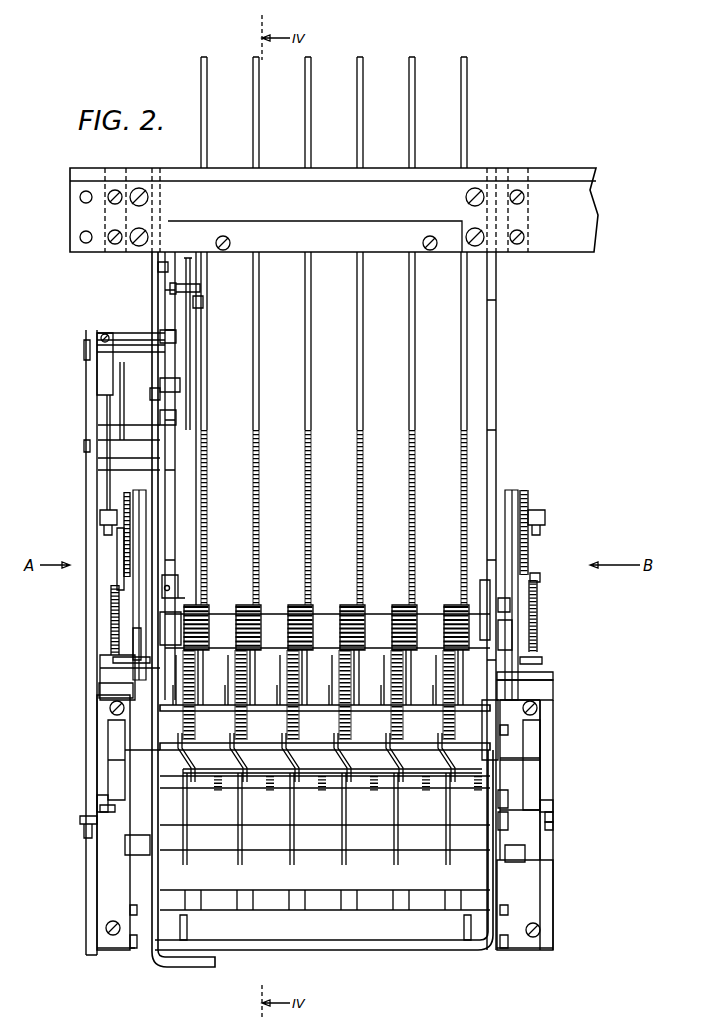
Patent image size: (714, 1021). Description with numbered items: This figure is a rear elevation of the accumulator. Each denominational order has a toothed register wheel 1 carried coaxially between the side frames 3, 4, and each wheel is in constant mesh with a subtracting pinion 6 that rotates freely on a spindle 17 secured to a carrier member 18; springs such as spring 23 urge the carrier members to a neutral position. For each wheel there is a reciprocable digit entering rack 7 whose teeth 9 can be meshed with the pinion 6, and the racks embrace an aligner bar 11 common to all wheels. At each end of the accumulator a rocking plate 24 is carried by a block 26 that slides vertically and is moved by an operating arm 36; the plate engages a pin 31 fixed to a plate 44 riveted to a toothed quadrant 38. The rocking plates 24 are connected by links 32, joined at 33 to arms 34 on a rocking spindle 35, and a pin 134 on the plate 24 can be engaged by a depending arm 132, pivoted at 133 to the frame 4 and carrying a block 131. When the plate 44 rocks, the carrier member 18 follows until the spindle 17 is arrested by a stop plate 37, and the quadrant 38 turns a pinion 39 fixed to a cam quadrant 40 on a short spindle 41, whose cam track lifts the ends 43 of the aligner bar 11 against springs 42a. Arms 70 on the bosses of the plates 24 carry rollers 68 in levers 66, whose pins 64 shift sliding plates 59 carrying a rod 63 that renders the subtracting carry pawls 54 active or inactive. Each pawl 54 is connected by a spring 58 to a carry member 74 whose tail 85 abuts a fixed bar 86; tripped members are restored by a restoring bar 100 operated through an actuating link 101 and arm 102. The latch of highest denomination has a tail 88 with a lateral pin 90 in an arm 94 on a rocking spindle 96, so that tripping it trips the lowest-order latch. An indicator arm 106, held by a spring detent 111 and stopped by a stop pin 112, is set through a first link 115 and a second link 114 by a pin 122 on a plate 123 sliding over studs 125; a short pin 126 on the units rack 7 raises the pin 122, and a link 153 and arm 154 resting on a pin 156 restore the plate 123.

The register wheel 1 is at (347, 694).
The side frame 3 is at (497, 480).
The side frame 4 is at (160, 295).
The subtracting pinion 6 is at (303, 615).
The digit entering rack 7 is at (311, 372).
The teeth 9 is at (311, 520).
The aligner bar 11 is at (378, 612).
The spindle 17 is at (551, 642).
The carrier member 18 is at (113, 659).
The spring 23 is at (112, 608).
The rocking plate 24 is at (95, 740).
The block 26 is at (130, 948).
The pin 31 is at (101, 692).
The link 32 is at (110, 806).
The connection 33 is at (100, 798).
The arm 34 is at (564, 773).
The rocking spindle 35 is at (507, 734).
The operating arm 36 is at (147, 948).
The stop plate 37 is at (511, 605).
The toothed quadrant 38 is at (121, 560).
The pinion 39 is at (128, 490).
The cam quadrant 40 is at (139, 548).
The short spindle 41 is at (100, 520).
The spring 42a is at (172, 585).
The end of aligner bar 43 is at (490, 592).
The plate 44 is at (135, 634).
The subtracting carry pawl 54 is at (316, 756).
The spring 58 is at (325, 782).
The sliding plate 59 is at (160, 750).
The rod 63 is at (517, 798).
The pin 64 is at (564, 752).
The lever 66 is at (152, 818).
The roller 68 is at (127, 842).
The arm 70 is at (120, 893).
The carry member 74 is at (388, 826).
The tail 85 is at (400, 890).
The fixed bar 86 is at (395, 905).
The tail 88 is at (178, 905).
The lateral pin 90 is at (188, 926).
The arm 94 is at (192, 940).
The rocking spindle 96 is at (262, 945).
The restoring bar 100 is at (266, 775).
The actuating link 101 is at (548, 806).
The arm 102 is at (519, 819).
The indicator arm 106 is at (107, 482).
The spring detent 111 is at (98, 378).
The stop pin 112 is at (84, 446).
The second link 114 is at (190, 256).
The first link 115 is at (191, 358).
The pin 122 is at (198, 289).
The plate 123 is at (181, 376).
The stud 125 is at (160, 265).
The short pin 126 is at (200, 304).
The block 131 is at (86, 628).
The depending arm 132 is at (86, 582).
The pivot 133 is at (84, 340).
The pin 134 is at (80, 820).
The link 153 is at (180, 441).
The arm 154 is at (177, 342).
The pin 156 is at (165, 348).